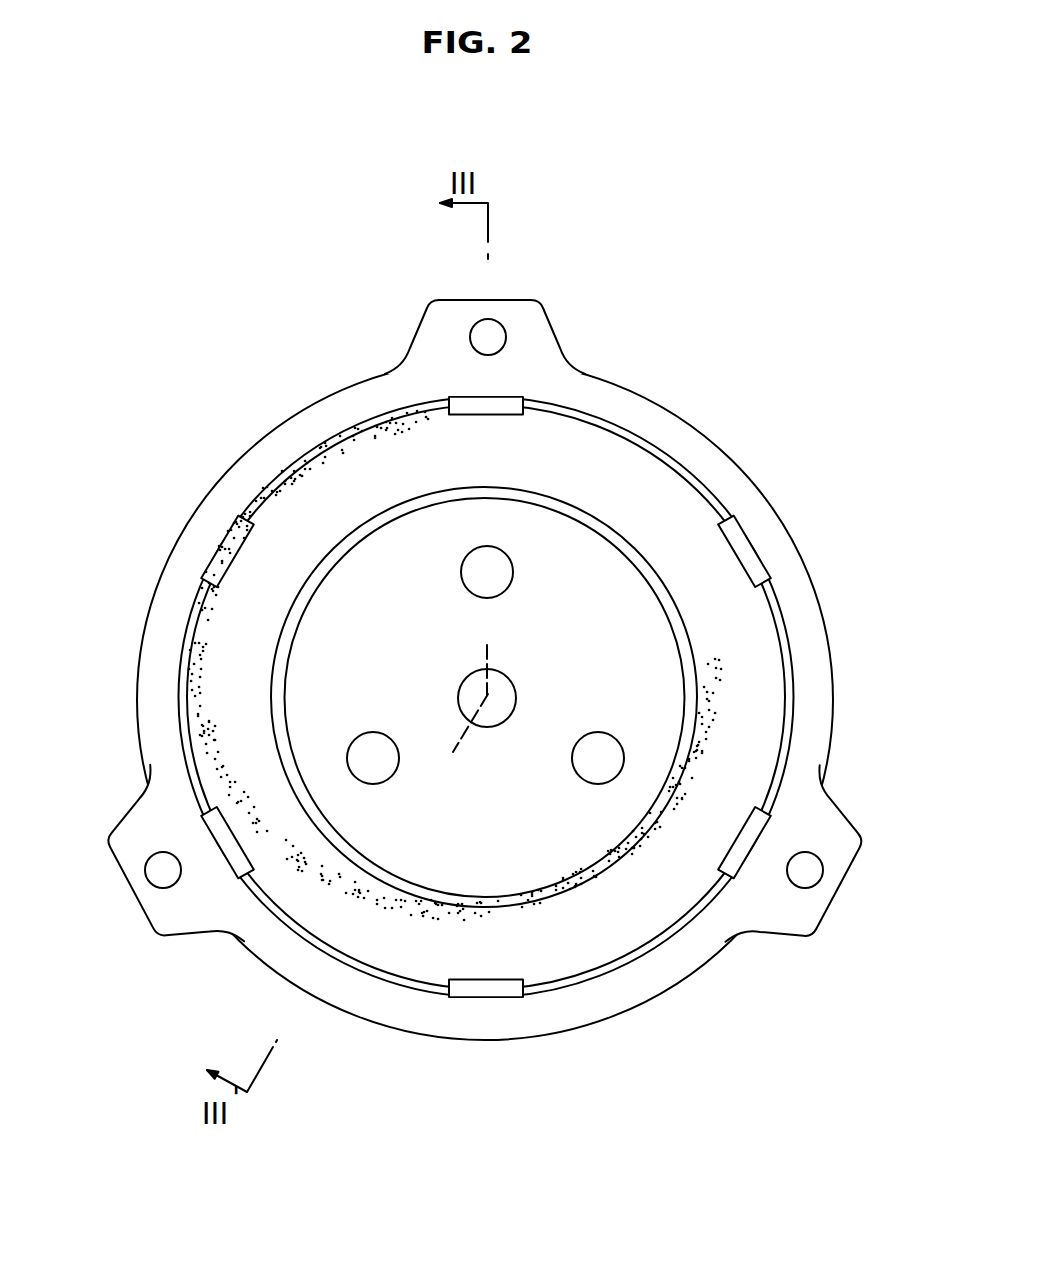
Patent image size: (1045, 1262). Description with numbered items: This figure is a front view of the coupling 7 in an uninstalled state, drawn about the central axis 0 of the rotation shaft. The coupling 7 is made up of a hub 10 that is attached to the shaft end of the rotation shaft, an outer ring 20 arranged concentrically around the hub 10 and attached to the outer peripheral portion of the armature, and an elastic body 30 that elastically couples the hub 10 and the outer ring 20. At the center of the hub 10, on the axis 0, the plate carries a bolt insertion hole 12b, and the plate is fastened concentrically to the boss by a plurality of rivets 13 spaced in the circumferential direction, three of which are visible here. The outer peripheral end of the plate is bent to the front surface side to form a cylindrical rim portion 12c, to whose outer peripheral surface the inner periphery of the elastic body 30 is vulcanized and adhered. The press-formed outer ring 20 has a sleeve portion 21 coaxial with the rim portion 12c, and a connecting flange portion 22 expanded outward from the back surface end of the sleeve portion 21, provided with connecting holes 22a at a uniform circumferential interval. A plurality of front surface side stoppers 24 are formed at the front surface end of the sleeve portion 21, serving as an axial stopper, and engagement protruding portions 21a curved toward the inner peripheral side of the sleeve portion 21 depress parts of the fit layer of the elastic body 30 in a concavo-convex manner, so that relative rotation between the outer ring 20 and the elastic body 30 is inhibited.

The coupling 7 is at (220, 400).
The hub 10 is at (607, 882).
The bolt insertion hole 12b is at (468, 687).
The rim portion 12c is at (643, 575).
The rivets 13 is at (505, 575).
The outer ring 20 is at (592, 410).
The sleeve portion 21 is at (793, 623).
The engagement protruding portions 21a is at (333, 438).
The connecting flange portion 22 is at (665, 423).
The connecting holes 22a is at (490, 335).
The front surface side stoppers 24 is at (225, 553).
The elastic body 30 is at (678, 525).
The center axis 0 is at (482, 698).